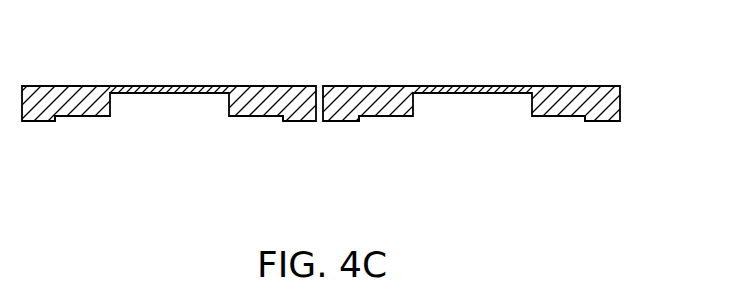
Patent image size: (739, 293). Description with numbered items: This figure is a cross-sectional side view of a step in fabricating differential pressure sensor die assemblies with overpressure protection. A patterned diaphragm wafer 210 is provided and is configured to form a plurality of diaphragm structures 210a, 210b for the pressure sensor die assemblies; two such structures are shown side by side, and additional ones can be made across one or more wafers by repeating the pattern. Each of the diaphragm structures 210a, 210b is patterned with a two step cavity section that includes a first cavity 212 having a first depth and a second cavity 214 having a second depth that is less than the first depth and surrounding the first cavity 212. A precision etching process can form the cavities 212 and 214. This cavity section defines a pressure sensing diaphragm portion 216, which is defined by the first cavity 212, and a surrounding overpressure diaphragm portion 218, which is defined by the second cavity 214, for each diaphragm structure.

The patterned diaphragm wafer 210 is at (622, 103).
The diaphragm structure 210a is at (50, 87).
The diaphragm structure 210b is at (598, 96).
The first cavity 212 is at (165, 93).
The second cavity 214 is at (57, 121).
The pressure sensing diaphragm portion 216 is at (163, 87).
The overpressure diaphragm portion 218 is at (263, 117).